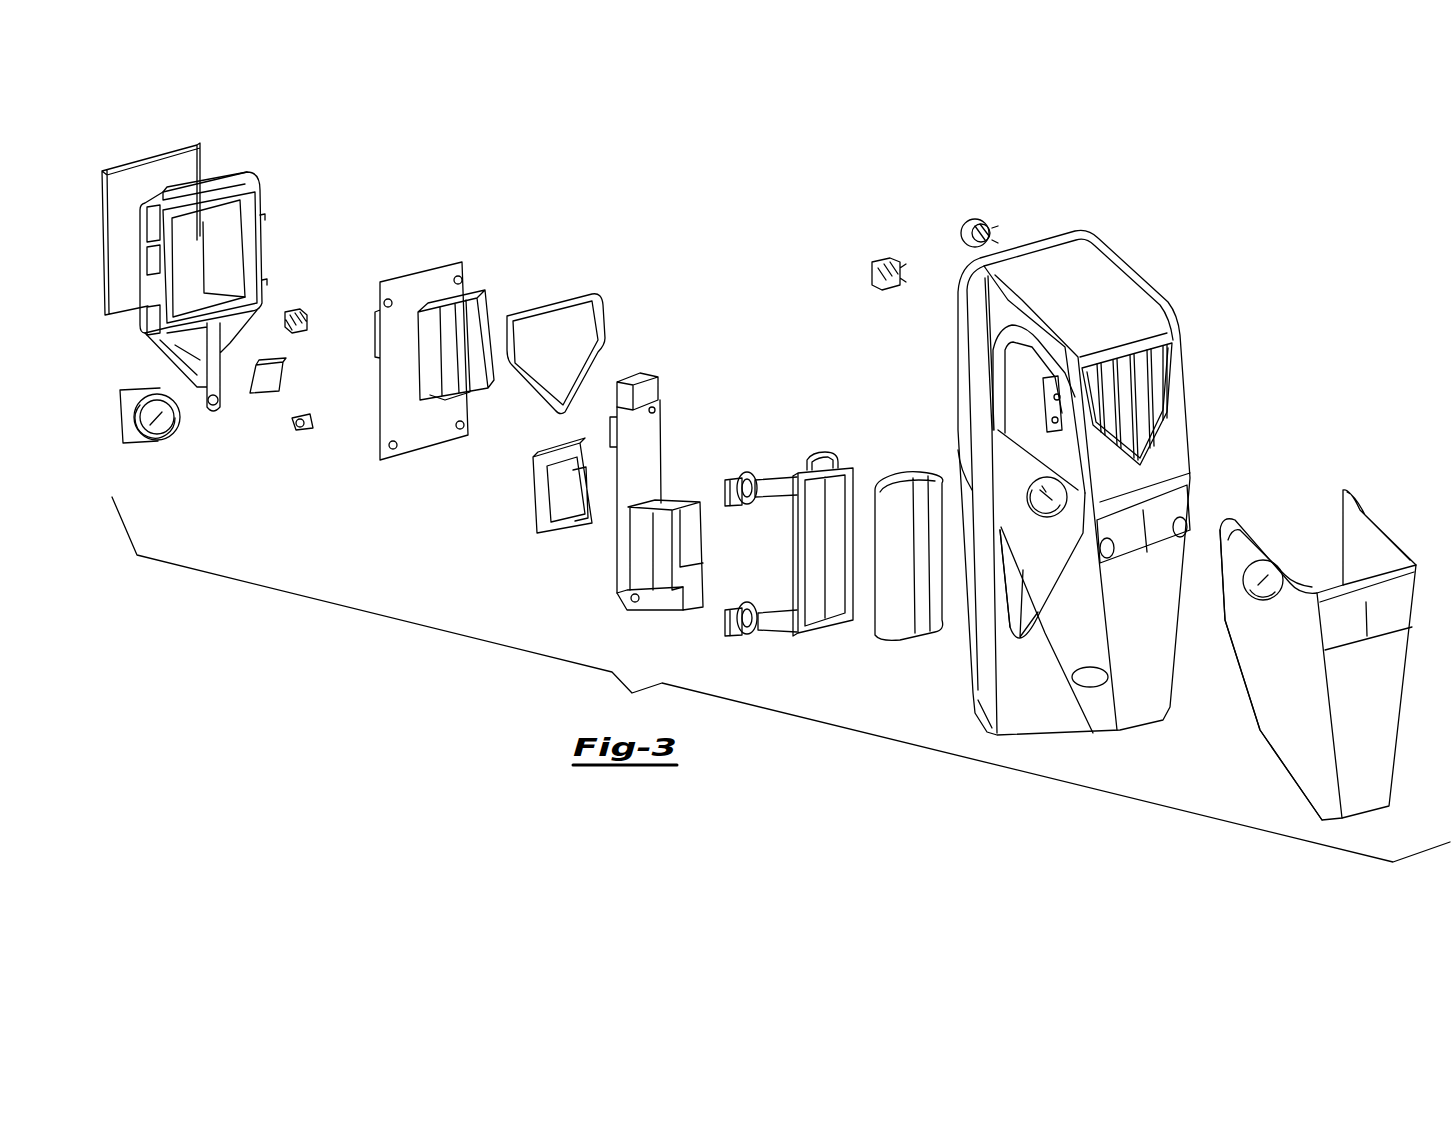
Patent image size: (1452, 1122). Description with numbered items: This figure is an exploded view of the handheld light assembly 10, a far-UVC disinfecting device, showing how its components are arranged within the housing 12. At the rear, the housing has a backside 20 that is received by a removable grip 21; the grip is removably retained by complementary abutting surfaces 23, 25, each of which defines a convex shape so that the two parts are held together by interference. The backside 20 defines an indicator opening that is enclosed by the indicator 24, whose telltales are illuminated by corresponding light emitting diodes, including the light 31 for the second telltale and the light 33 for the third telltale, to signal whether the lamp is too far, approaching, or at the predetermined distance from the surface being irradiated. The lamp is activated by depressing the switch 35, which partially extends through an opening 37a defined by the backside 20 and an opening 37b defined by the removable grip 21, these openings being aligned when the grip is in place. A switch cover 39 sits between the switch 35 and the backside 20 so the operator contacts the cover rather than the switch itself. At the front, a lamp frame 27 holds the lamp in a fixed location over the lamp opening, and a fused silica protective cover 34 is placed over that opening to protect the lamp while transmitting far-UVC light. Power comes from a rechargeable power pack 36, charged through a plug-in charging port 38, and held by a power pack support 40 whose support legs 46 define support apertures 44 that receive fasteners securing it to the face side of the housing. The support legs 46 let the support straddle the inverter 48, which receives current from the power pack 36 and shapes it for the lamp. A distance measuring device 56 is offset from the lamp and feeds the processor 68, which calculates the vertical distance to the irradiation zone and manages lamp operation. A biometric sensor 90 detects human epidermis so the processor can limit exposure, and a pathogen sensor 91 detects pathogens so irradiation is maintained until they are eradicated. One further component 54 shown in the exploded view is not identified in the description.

The handheld light assembly 10 is at (1101, 437).
The housing 12 is at (1101, 482).
The backside 20 is at (1175, 455).
The removable grip 21 is at (1376, 699).
The complementary abutting surface 23 is at (1255, 636).
The indicator 24 is at (572, 303).
The complementary abutting surface 25 is at (1023, 568).
The lamp frame 27 is at (256, 185).
The light 31 is at (455, 402).
The light 33 is at (466, 305).
The fused silica protective cover 34 is at (160, 152).
The switch 35 is at (310, 420).
The power pack 36 is at (908, 482).
The opening 37a is at (1045, 512).
The opening 37b is at (1258, 592).
The plug-in charging port 38 is at (302, 331).
The switch cover 39 is at (170, 432).
The power pack support 40 is at (845, 466).
The support apertures 44 is at (750, 613).
The support legs 46 is at (786, 610).
The inverter 48 is at (672, 503).
The retainer 54 is at (580, 525).
The distance measuring device 56 is at (283, 378).
The processor 68 is at (415, 272).
The biometric sensor 90 is at (872, 272).
The pathogen sensor 91 is at (963, 230).